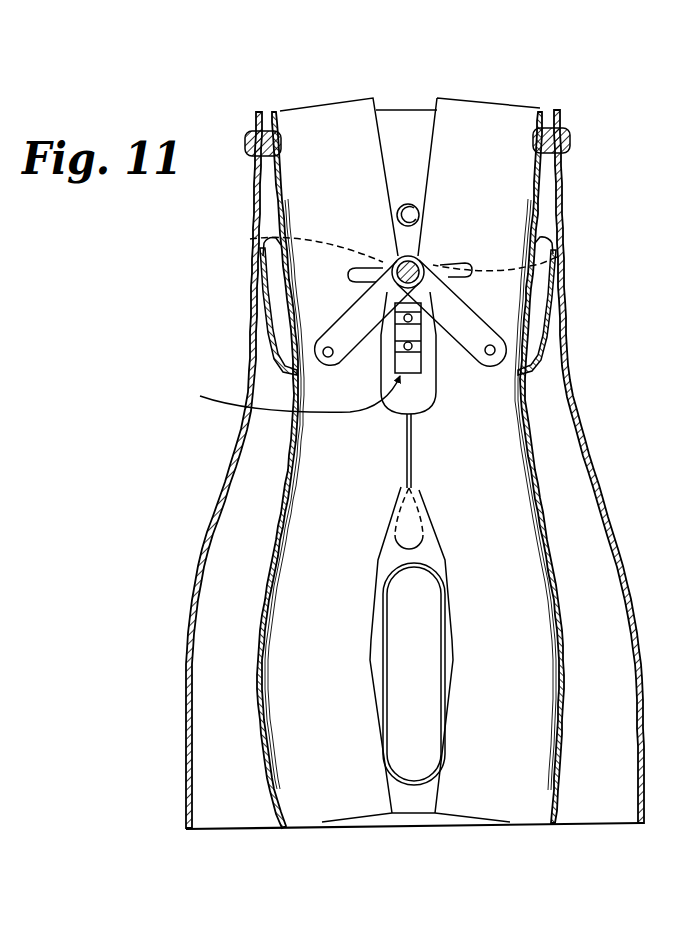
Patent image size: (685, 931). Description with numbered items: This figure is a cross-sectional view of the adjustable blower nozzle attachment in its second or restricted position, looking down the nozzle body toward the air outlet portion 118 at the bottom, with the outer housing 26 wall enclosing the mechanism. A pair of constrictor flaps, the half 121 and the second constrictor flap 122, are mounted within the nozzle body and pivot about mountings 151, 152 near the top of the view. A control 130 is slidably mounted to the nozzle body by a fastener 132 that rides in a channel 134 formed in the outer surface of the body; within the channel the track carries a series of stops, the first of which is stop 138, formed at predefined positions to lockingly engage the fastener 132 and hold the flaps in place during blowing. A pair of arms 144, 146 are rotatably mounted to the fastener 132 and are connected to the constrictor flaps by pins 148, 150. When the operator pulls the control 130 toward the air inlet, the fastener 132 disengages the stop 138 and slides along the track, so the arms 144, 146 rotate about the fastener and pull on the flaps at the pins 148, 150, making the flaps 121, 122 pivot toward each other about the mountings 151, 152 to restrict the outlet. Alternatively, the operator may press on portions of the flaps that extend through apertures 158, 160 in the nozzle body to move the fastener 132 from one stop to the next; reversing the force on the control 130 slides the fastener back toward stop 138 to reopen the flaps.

The housing 26 is at (322, 469).
The air outlet portion 118 is at (403, 827).
The first jaw half 121 is at (325, 97).
The second constrictor flap 122 is at (485, 97).
The control 130 is at (557, 257).
The fastener 132 is at (250, 239).
The channel 134 is at (289, 357).
The stop 138 is at (421, 373).
The arm 144 is at (345, 307).
The arm 146 is at (473, 312).
The pin 148 is at (323, 352).
The pin 150 is at (495, 350).
The mounting 151 is at (242, 145).
The mounting 152 is at (572, 142).
The aperture 158 is at (260, 260).
The aperture 160 is at (553, 240).